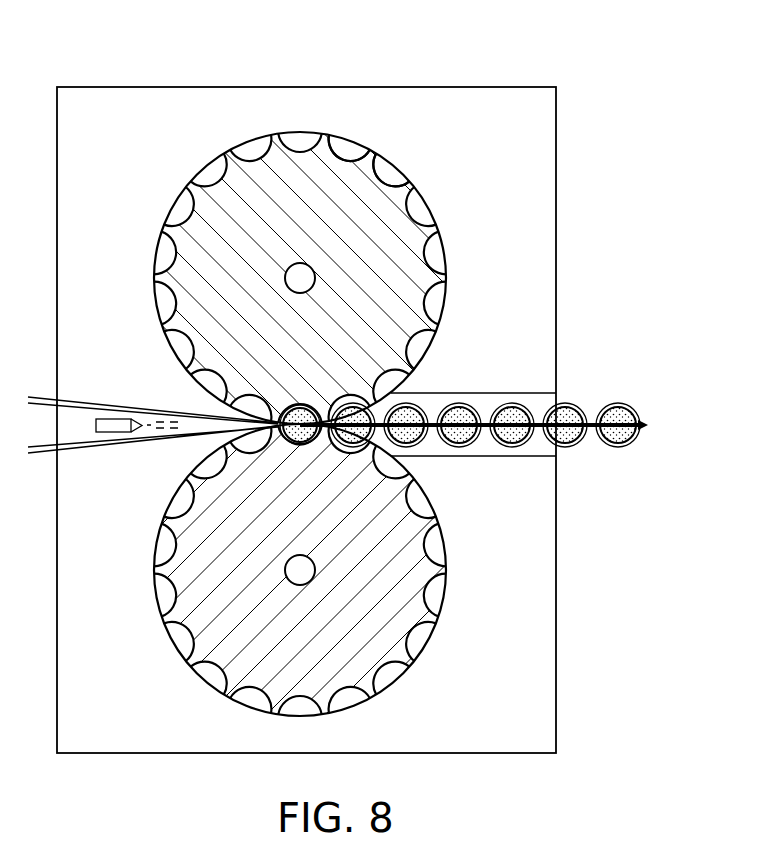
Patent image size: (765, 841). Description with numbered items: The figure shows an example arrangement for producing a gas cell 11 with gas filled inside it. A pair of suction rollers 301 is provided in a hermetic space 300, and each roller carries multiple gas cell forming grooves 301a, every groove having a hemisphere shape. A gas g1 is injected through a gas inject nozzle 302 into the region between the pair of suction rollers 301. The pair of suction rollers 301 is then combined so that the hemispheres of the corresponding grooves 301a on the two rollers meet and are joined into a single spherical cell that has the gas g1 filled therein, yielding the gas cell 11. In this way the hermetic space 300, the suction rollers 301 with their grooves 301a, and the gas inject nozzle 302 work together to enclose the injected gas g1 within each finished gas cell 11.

The hermetic space 300 is at (150, 118).
The suction roller 301 is at (280, 167).
The gas cell forming groove 301a is at (390, 175).
The gas inject nozzle 302 is at (115, 418).
The gas cell 11 is at (464, 358).
The gas g1 is at (575, 407).